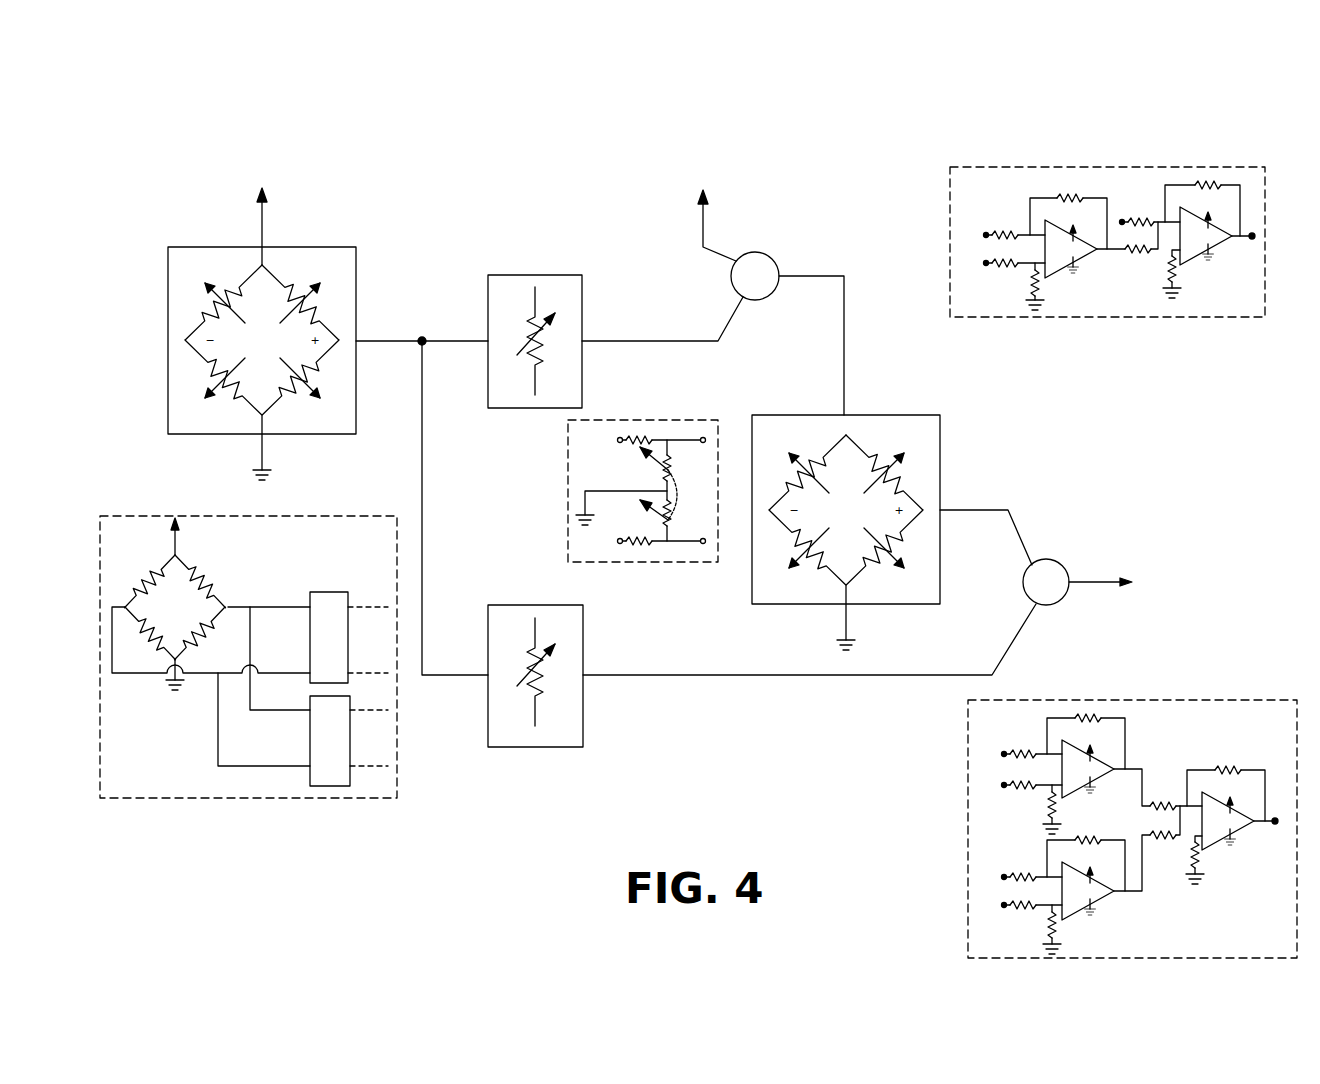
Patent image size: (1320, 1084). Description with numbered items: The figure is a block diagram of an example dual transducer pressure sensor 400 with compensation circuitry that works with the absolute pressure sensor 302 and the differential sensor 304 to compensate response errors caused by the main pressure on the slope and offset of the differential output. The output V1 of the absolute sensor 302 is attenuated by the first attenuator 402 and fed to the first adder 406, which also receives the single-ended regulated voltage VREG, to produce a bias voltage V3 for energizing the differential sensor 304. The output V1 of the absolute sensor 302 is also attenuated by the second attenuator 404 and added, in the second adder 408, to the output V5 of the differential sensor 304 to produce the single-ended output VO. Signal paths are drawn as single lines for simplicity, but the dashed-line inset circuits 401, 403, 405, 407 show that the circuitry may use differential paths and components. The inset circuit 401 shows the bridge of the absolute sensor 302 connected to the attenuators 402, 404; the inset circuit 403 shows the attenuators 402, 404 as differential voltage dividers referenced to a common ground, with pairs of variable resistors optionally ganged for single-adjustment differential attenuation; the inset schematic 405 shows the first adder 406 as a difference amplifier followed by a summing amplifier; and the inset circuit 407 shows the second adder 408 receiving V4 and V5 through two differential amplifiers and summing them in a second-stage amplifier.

The dual transducer pressure sensor 400 is at (724, 122).
The absolute pressure sensor 302 is at (246, 320).
The differential sensor 304 is at (822, 509).
The inset circuit 401 is at (486, 737).
The first attenuator 402 is at (534, 320).
The inset circuit 403 is at (528, 557).
The second attenuator 404 is at (534, 655).
The inset schematic 405 is at (826, 238).
The first adder 406 is at (757, 300).
The inset circuit 407 is at (1160, 692).
The second adder 408 is at (1050, 605).